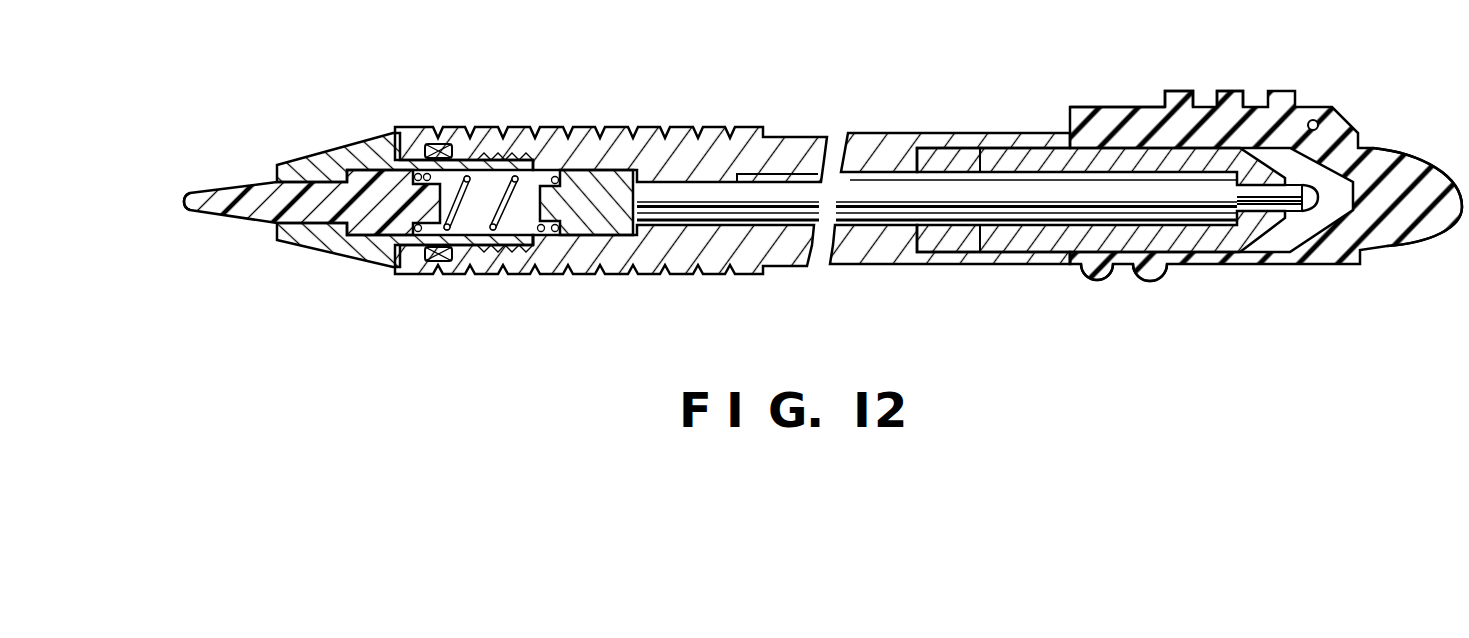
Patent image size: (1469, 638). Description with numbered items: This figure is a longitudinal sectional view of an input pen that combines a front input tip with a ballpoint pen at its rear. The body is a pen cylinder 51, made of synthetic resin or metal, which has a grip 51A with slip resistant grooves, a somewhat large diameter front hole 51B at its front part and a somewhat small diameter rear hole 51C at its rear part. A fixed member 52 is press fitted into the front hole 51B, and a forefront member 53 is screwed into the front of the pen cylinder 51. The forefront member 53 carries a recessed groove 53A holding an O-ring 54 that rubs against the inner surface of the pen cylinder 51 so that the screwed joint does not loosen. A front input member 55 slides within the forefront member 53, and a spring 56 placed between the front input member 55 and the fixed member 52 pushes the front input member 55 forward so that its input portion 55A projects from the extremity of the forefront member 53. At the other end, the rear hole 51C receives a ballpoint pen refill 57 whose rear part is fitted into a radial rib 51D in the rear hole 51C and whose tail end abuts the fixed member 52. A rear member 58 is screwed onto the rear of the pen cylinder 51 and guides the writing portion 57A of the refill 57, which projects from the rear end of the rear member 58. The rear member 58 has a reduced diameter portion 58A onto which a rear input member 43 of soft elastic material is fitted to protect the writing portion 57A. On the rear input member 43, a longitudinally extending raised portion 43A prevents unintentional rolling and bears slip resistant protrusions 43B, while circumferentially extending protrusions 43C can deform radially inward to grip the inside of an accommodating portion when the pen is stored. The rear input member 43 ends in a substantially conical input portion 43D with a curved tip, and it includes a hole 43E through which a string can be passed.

The rear input member 43 is at (1362, 120).
The raised portion 43A is at (1113, 112).
The slip resistant protrusions 43B is at (1228, 90).
The protrusions 43C is at (1153, 280).
The input portion 43D is at (1424, 227).
The hole 43E is at (1313, 119).
The pen cylinder 51 is at (775, 140).
The grip 51A is at (617, 275).
The front hole 51B is at (542, 240).
The rear hole 51C is at (867, 267).
The radial rib 51D is at (700, 177).
The fixed member 52 is at (585, 178).
The forefront member 53 is at (332, 155).
The recessed groove 53A is at (420, 246).
The O-ring 54 is at (432, 146).
The front input member 55 is at (222, 183).
The input portion 55A is at (211, 208).
The spring 56 is at (472, 192).
The ballpoint pen refill 57 is at (892, 197).
The writing portion 57A is at (1295, 215).
The rear member 58 is at (993, 157).
The reduced diameter portion 58A is at (1047, 270).